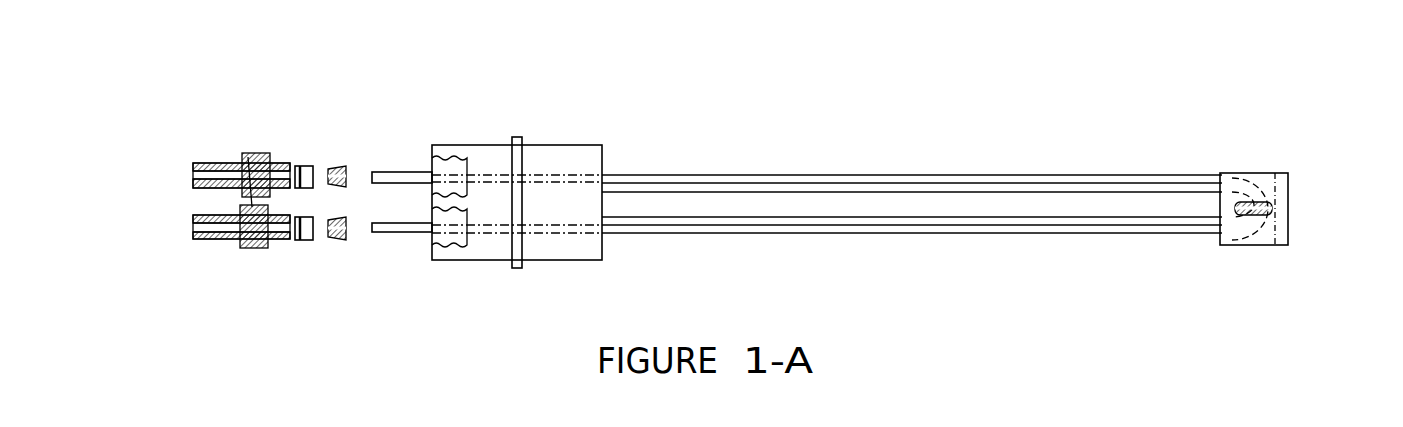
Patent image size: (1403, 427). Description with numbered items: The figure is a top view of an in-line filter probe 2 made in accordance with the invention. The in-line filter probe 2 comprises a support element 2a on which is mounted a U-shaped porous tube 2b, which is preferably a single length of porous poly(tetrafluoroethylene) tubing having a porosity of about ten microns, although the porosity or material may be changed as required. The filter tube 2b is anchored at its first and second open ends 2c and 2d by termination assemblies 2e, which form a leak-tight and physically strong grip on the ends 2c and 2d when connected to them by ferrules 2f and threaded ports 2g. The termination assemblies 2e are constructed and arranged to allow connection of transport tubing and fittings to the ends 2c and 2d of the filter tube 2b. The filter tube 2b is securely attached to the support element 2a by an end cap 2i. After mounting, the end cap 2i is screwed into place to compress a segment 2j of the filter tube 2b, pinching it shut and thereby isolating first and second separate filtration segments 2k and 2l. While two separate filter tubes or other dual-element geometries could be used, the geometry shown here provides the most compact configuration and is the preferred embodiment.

The in-line filter probe 2 is at (757, 88).
The support element 2a is at (555, 145).
The U-shaped porous tube 2b is at (1087, 165).
The first open end 2c is at (497, 175).
The second open end 2d is at (495, 230).
The termination assemblies 2e is at (263, 157).
The ferrules 2f is at (337, 237).
The threaded ports 2g is at (448, 160).
The end cap 2i is at (1282, 185).
The segment 2j is at (1265, 228).
The first filtration segment 2k is at (858, 175).
The second filtration segment 2l is at (880, 235).